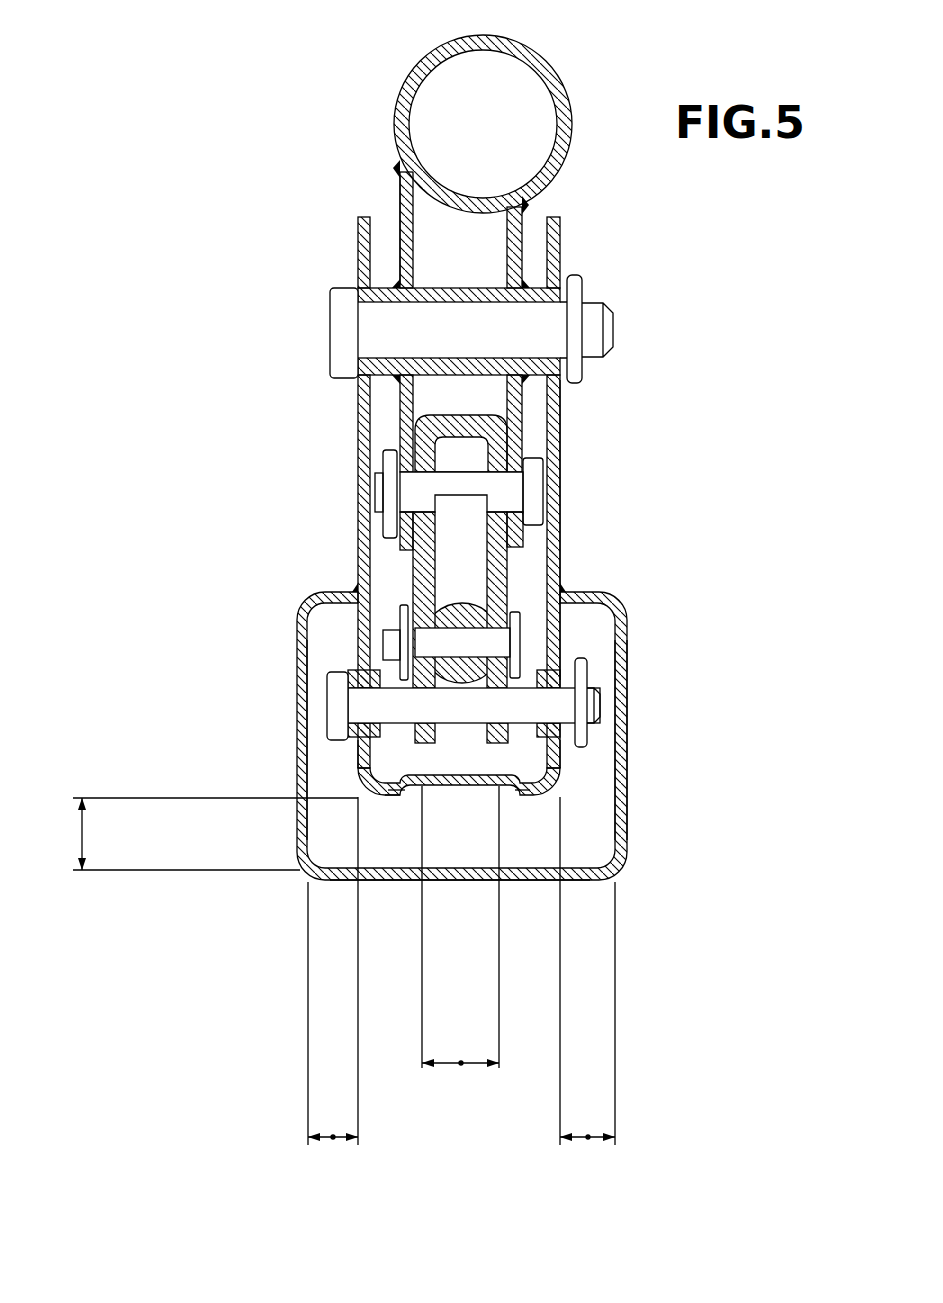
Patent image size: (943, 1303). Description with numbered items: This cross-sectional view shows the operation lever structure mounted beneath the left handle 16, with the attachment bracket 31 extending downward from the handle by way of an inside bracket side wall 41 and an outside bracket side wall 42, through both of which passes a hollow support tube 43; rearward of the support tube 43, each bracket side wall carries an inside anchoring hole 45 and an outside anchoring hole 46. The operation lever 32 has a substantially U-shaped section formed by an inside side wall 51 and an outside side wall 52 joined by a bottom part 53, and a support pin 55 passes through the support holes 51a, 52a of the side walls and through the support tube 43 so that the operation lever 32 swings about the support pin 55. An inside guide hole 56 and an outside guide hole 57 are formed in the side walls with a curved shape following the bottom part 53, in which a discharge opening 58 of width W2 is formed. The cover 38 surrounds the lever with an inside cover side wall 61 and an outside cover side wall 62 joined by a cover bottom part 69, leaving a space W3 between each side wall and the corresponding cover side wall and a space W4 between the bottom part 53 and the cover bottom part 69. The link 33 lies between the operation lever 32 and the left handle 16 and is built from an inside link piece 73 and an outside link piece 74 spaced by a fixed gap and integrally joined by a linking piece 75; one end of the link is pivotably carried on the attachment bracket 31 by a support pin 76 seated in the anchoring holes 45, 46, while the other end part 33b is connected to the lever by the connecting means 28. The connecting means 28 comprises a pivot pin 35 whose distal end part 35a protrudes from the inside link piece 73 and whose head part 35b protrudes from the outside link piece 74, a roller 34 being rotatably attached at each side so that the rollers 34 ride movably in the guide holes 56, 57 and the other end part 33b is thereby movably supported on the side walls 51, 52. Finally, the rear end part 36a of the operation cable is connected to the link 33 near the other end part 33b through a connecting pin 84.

The left handle 16 is at (545, 64).
The connecting means 28 is at (318, 673).
The attachment bracket 31 is at (390, 195).
The operation lever 32 is at (575, 447).
The link 33 is at (575, 575).
The other end part 33b is at (420, 778).
The roller 34 is at (372, 765).
The pivot pin 35 is at (320, 697).
The distal end part 35a is at (600, 700).
The head part 35b is at (337, 712).
The rear end part 36a is at (472, 685).
The cover 38 is at (636, 819).
The inside bracket side wall 41 is at (560, 255).
The outside bracket side wall 42 is at (400, 255).
The support tube 43 is at (400, 438).
The inside anchoring hole 45 is at (543, 490).
The outside anchoring hole 46 is at (415, 486).
The inside side wall 51 is at (560, 410).
The support hole 51a is at (614, 318).
The outside side wall 52 is at (360, 408).
The support hole 52a is at (357, 310).
The bottom part 53 is at (521, 790).
The support pin 55 is at (342, 347).
The inside guide hole 56 is at (578, 733).
The outside guide hole 57 is at (350, 730).
The discharge opening 58 is at (417, 780).
The inside cover side wall 61 is at (627, 780).
The outside cover side wall 62 is at (345, 797).
The cover bottom part 69 is at (545, 882).
The inside link piece 73 is at (517, 583).
The outside link piece 74 is at (405, 553).
The linking piece 75 is at (460, 416).
The support pin 76 is at (385, 490).
The connecting pin 84 is at (520, 640).
The width of the discharge opening W2 is at (461, 1063).
The amount of space between side wall and cover side wall W3 is at (333, 1137).
The amount of space between bottom part and cover bottom part W4 is at (190, 834).